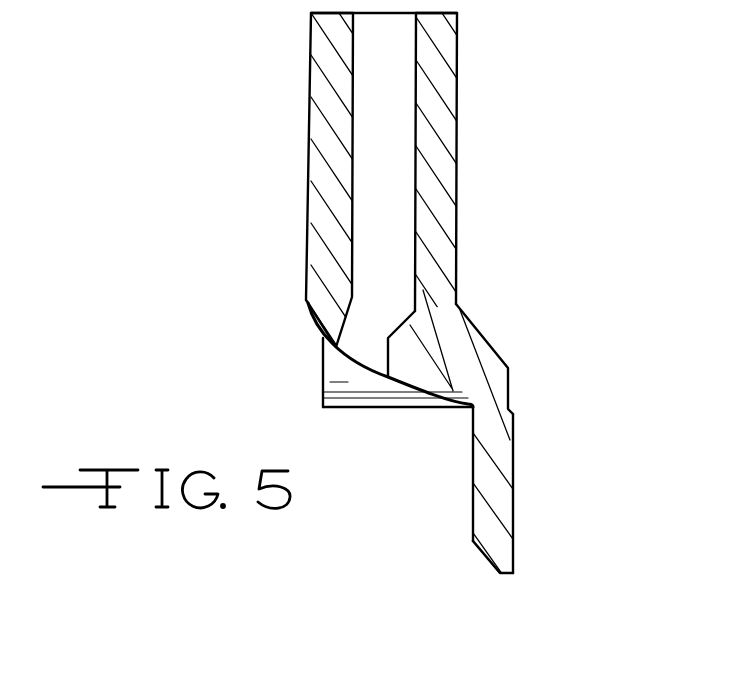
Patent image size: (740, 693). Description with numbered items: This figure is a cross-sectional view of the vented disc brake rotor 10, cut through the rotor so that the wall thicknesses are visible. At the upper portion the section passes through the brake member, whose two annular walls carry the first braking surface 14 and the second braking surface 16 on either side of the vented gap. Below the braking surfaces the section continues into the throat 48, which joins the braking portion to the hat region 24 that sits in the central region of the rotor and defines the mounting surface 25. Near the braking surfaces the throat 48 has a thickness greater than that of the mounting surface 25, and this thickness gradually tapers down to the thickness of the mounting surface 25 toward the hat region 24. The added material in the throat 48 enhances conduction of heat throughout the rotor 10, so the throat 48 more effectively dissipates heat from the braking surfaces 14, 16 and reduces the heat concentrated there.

The vented disc brake rotor 10 is at (242, 71).
The first braking surface 14 is at (311, 150).
The second braking surface 16 is at (458, 108).
The throat 48 is at (477, 330).
The hat region 24 is at (515, 474).
The mounting surface 25 is at (515, 562).